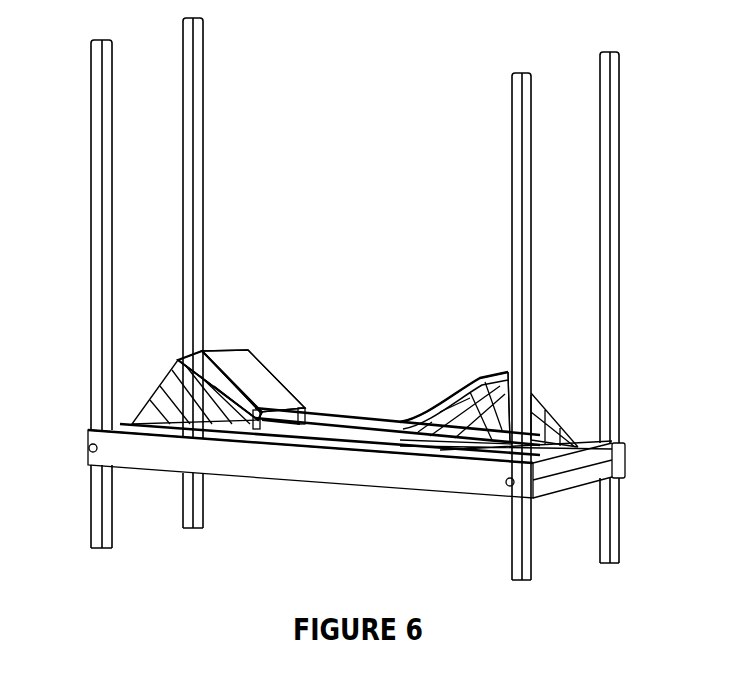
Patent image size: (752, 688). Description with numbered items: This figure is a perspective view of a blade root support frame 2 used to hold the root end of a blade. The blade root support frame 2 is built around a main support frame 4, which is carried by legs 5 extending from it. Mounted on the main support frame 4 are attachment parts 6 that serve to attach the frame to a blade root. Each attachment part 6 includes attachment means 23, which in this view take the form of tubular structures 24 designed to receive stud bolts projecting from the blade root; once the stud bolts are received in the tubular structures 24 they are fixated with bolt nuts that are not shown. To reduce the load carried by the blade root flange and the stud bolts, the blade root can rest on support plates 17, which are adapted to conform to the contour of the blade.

The blade root support frame 2 is at (275, 508).
The main support frame 4 is at (376, 404).
The legs 5 is at (618, 238).
The attachment parts 6 is at (177, 332).
The support plates 17 is at (268, 373).
The attachment means 23 is at (175, 358).
The tubular structures 24 is at (466, 372).